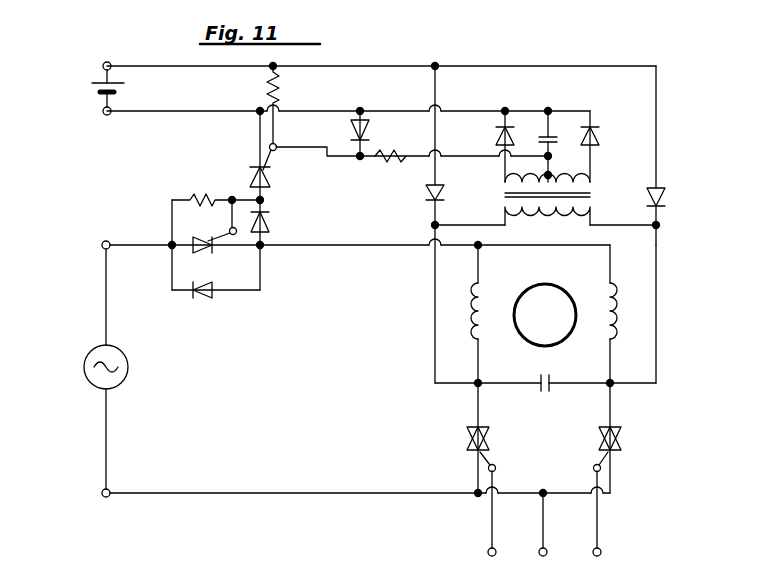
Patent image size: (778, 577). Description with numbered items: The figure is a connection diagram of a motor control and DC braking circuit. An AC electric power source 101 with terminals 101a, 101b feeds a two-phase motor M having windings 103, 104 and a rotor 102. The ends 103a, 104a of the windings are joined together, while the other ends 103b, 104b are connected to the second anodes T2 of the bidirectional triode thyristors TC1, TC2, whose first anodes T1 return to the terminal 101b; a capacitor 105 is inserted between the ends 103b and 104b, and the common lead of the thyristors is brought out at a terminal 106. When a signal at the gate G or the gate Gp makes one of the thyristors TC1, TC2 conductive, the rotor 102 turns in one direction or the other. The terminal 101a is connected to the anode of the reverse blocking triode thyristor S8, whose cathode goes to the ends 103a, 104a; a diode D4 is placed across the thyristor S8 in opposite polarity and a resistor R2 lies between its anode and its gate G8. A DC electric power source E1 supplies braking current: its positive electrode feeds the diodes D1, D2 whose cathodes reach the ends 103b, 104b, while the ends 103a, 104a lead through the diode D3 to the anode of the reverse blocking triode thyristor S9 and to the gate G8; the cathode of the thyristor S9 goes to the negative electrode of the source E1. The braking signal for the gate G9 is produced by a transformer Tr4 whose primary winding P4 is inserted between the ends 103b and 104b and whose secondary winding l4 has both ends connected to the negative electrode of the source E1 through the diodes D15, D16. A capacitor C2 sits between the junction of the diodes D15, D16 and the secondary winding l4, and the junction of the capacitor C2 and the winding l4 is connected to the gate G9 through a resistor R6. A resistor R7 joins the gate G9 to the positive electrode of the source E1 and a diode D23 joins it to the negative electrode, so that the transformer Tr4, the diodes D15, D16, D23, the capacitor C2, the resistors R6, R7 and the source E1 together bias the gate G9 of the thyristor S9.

The DC electric power source E1 is at (90, 91).
The resistor R7 is at (265, 90).
The gate of thyristor S9 G9 is at (311, 146).
The reverse blocking triode thyristor S9 is at (270, 178).
The diode D23 is at (369, 131).
The resistor R6 is at (384, 170).
The diode D1 is at (420, 202).
The diode D15 is at (496, 135).
The capacitor C2 is at (557, 140).
The diode D16 is at (599, 135).
The transformer Tr4 is at (552, 207).
The secondary winding l4 is at (529, 179).
The primary winding P4 is at (600, 196).
The diode D2 is at (665, 198).
The resistor R2 is at (218, 231).
The gate of thyristor S8 G8 is at (218, 220).
The reverse blocking triode thyristor S8 is at (200, 252).
The diode D3 is at (269, 222).
The diode D4 is at (205, 298).
The AC electric power source 101 is at (84, 366).
The terminal of power source 101a is at (81, 245).
The terminal of power source 101b is at (81, 493).
The rotor 102 is at (524, 288).
The two-phase motor M is at (583, 282).
The winding 103 is at (458, 311).
The end of winding 103a is at (460, 264).
The end of winding 103b is at (449, 383).
The winding 104 is at (630, 313).
The end of winding 104a is at (636, 259).
The end of winding 104b is at (639, 383).
The capacitor 105 is at (538, 378).
The common terminal 106 is at (542, 558).
The bidirectional triode thyristor TC1 is at (465, 448).
The bidirectional triode thyristor TC2 is at (622, 448).
The first anode T1 is at (470, 455).
The second anode T2 is at (492, 420).
The gate G is at (497, 504).
The gate Gp is at (587, 504).